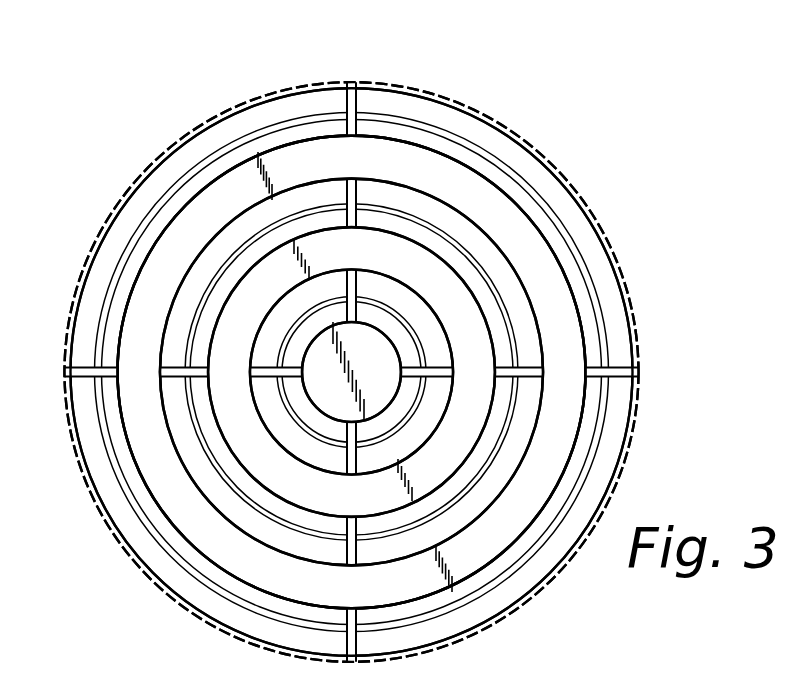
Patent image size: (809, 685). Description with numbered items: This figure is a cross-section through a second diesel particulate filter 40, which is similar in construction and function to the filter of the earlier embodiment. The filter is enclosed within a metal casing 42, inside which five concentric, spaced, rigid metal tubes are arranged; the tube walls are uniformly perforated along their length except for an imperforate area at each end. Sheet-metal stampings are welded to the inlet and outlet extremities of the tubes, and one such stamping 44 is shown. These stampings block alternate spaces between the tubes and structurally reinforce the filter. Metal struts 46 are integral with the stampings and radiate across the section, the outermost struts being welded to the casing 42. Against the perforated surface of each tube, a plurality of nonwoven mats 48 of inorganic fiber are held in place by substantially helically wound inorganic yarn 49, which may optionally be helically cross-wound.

The diesel particulate filter 40 is at (588, 106).
The metal casing 42 is at (580, 197).
The sheet-metal stamping 44 is at (463, 160).
The metal struts 46 is at (167, 383).
The nonwoven mats 48 is at (493, 322).
The helically wound inorganic yarn 49 is at (492, 278).